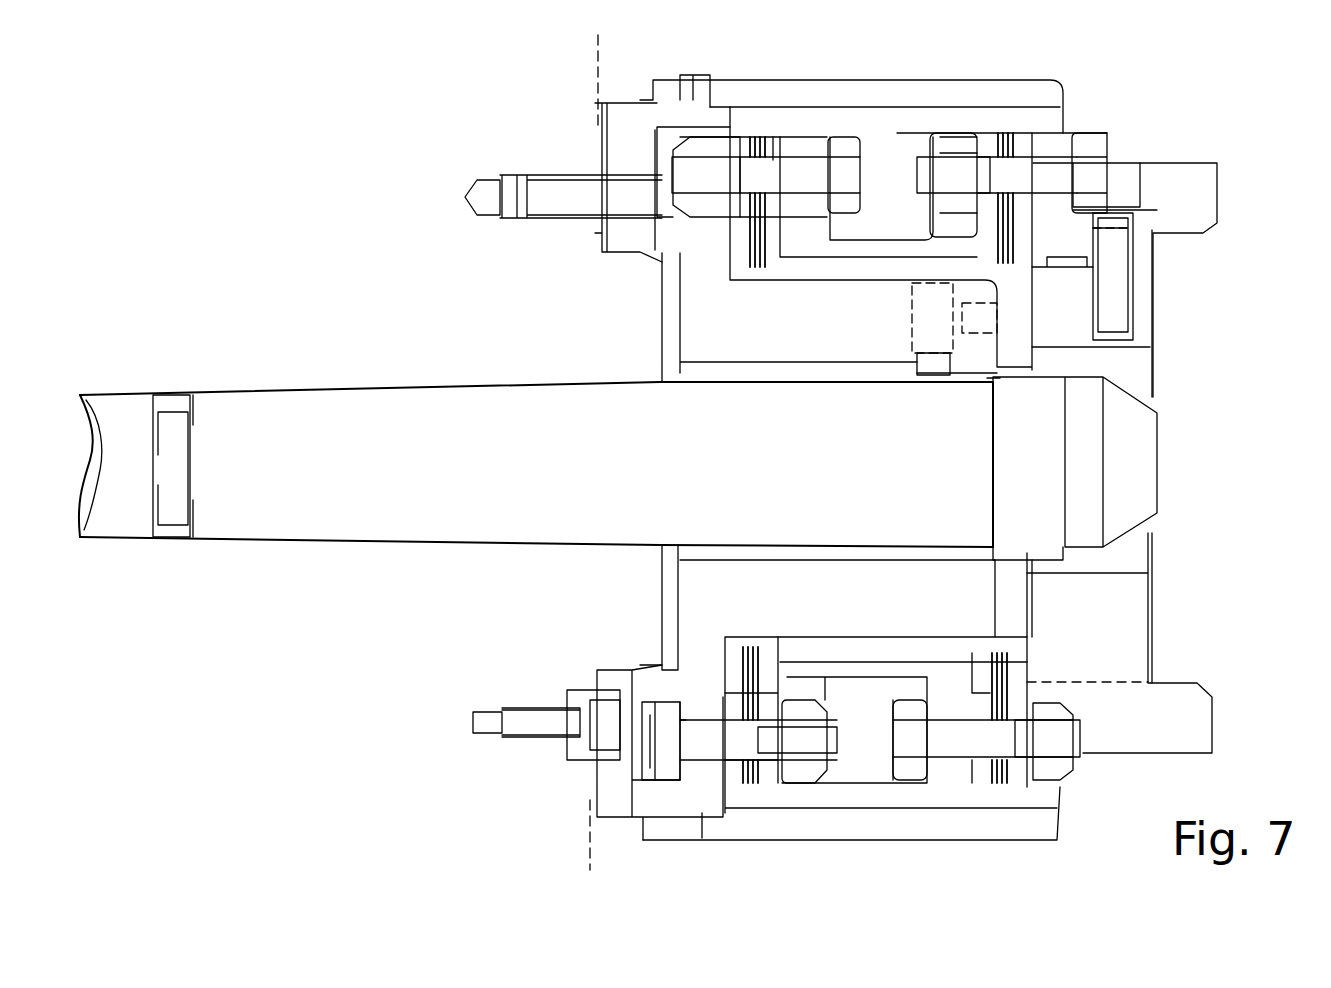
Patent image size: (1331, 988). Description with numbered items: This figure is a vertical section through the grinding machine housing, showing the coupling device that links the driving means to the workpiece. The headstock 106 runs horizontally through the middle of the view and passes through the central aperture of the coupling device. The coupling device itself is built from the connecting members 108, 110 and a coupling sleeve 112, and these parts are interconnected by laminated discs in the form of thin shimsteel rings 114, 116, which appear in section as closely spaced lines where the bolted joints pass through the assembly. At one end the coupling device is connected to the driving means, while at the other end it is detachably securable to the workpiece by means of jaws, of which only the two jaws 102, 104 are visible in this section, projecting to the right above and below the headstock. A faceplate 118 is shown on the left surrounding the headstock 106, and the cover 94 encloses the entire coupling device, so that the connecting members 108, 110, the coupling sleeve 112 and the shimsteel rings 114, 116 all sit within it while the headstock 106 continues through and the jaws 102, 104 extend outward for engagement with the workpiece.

The cover 94 is at (943, 830).
The jaw 102 is at (1200, 735).
The jaw 104 is at (1220, 190).
The headstock 106 is at (1150, 450).
The connecting member 108 is at (745, 140).
The connecting member 110 is at (1023, 140).
The coupling sleeve 112 is at (775, 135).
The shimsteel ring 114 is at (753, 787).
The shimsteel ring 116 is at (1000, 783).
The faceplate 118 is at (655, 807).